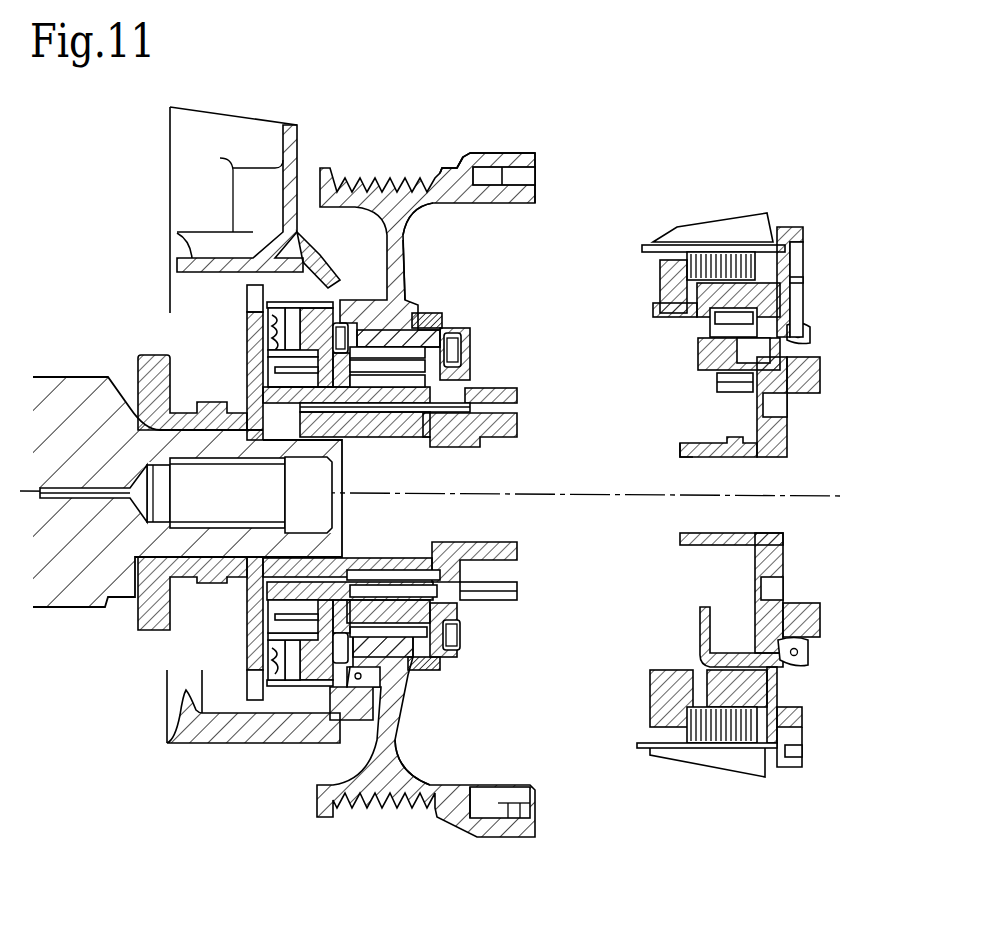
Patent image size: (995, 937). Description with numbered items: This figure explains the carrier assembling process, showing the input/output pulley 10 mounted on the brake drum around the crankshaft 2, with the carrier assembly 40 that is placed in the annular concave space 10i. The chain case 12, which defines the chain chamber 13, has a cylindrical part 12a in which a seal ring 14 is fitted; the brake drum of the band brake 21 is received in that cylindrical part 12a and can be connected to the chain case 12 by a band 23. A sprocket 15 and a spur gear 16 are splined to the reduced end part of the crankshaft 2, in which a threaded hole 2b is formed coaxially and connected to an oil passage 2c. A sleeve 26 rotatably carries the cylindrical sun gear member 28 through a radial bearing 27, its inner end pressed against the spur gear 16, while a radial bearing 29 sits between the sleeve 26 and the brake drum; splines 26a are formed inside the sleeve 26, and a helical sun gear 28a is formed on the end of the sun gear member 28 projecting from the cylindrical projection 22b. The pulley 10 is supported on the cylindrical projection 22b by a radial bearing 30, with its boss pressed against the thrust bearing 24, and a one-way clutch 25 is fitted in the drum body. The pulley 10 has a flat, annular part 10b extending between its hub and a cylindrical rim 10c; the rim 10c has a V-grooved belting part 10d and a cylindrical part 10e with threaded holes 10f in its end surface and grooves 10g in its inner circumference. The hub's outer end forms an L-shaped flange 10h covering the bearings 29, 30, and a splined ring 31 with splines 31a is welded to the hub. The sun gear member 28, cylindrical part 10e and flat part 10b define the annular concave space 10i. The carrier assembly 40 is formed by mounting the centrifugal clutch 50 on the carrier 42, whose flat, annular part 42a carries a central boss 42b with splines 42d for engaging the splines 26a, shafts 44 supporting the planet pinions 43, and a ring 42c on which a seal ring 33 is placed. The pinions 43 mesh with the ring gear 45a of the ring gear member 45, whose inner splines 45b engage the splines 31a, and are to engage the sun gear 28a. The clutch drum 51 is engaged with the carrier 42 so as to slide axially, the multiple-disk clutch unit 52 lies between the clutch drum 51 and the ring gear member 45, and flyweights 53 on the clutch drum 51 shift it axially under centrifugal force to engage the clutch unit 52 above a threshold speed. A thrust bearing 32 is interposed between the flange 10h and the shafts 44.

The crankshaft 2 is at (92, 377).
The threaded hole 2b is at (334, 486).
The oil passage 2c is at (90, 500).
The input/output pulley 10 is at (372, 155).
The flat, annular part 10b is at (404, 262).
The cylindrical rim 10c is at (545, 104).
The belting part 10d is at (407, 173).
The cylindrical part 10e is at (510, 153).
The threaded holes 10f is at (535, 177).
The grooves 10g is at (487, 792).
The flange 10h is at (448, 377).
The annular concave space 10i is at (508, 281).
The chain case 12 is at (297, 160).
The cylindrical part 12a is at (177, 233).
The chain chamber 13 is at (201, 628).
The seal ring 14 is at (368, 300).
The sprocket 15 is at (180, 413).
The spur gear 16 is at (247, 340).
The band brake 21 is at (319, 300).
The cylindrical projection 22b is at (353, 413).
The band 23 is at (302, 300).
The thrust bearing 24 is at (325, 686).
The one-way clutch 25 is at (262, 618).
The sleeve 26 is at (417, 437).
The splines 26a is at (473, 448).
The radial bearing 27 is at (422, 577).
The sun gear member 28 is at (373, 417).
The helical sun gear 28a is at (500, 388).
The radial bearing 29 is at (370, 605).
The radial bearing 30 is at (420, 666).
The splined ring 31 is at (443, 325).
The splines 31a is at (430, 313).
The thrust bearing 32 is at (460, 347).
The seal ring 33 is at (817, 331).
The carrier assembly 40 is at (729, 180).
The carrier 42 is at (795, 420).
The flat, annular part 42a is at (788, 403).
The central boss 42b is at (695, 458).
The ring 42c is at (820, 371).
The splines 42d is at (690, 445).
The planet pinions 43 is at (727, 392).
The shafts 44 is at (698, 357).
The ring gear member 45 is at (780, 297).
The ring gear 45a is at (707, 312).
The splines 45b is at (657, 322).
The centrifugal clutch 50 is at (648, 283).
The clutch drum 51 is at (703, 245).
The multiple-disk clutch unit 52 is at (663, 282).
The flyweights 53 is at (745, 222).